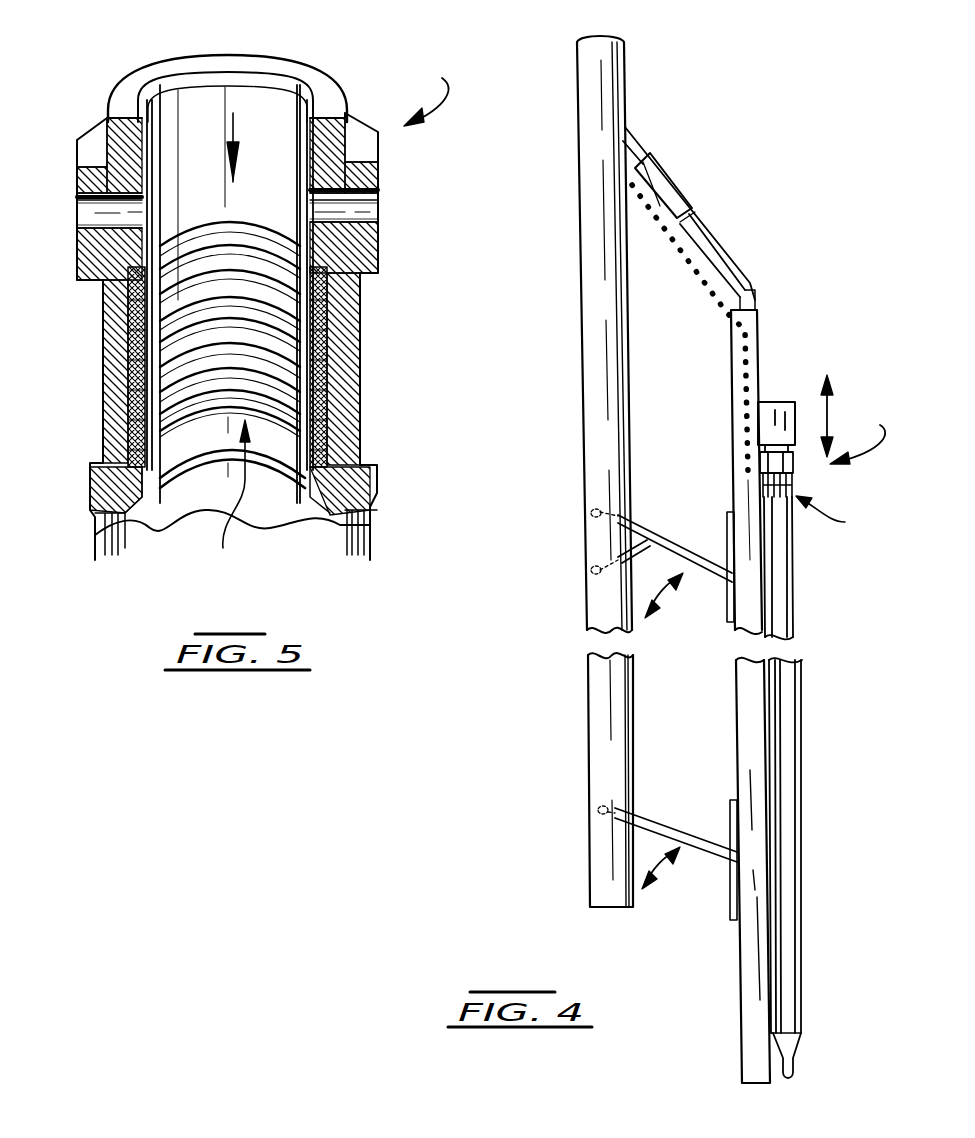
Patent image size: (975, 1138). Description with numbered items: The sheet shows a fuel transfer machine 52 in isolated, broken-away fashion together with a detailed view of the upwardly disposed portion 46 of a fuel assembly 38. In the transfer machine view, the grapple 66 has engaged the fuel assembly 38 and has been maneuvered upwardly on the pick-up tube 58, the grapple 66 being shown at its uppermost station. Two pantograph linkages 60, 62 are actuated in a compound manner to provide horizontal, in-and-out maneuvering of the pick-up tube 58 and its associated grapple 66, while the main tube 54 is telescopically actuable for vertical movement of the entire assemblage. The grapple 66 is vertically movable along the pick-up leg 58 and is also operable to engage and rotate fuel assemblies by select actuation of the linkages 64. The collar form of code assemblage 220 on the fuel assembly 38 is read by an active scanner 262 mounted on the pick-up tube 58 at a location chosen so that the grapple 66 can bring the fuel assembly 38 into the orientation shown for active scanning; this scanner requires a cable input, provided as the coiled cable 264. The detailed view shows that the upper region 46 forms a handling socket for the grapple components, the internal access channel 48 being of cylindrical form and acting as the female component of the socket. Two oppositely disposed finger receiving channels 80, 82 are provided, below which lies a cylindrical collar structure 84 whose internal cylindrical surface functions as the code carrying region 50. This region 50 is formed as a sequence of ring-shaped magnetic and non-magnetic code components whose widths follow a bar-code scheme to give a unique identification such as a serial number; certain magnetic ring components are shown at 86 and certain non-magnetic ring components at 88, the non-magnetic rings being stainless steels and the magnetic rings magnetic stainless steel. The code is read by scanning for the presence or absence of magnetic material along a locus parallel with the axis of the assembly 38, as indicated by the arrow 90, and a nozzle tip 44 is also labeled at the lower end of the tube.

In FIG. 5, the fuel assembly 38 is at (95, 542).
In FIG. 4, the fuel assembly 38 is at (785, 786).
In FIG. 4, the nozzle tip 44 is at (797, 1052).
In FIG. 5, the upwardly disposed portion 46 is at (426, 100).
In FIG. 4, the upwardly disposed portion 46 is at (857, 441).
In FIG. 5, the internal access channel 48 is at (272, 100).
In FIG. 5, the code carrying region 50 is at (223, 548).
In FIG. 4, the code carrying region 50 is at (837, 519).
In FIG. 4, the fuel transfer machine 52 is at (873, 292).
In FIG. 4, the main tube 54 is at (624, 70).
In FIG. 4, the pick-up tube 58 is at (758, 322).
In FIG. 4, the pantograph linkage 60 is at (676, 550).
In FIG. 4, the pantograph linkage 62 is at (665, 830).
In FIG. 4, the linkages 64 is at (742, 140).
In FIG. 4, the grapple 66 is at (783, 400).
In FIG. 5, the finger receiving channel 80 is at (90, 214).
In FIG. 5, the finger receiving channel 82 is at (365, 220).
In FIG. 5, the cylindrical collar structure 84 is at (352, 362).
In FIG. 5, the magnetic ring component 86 is at (128, 278).
In FIG. 5, the non-magnetic ring component 88 is at (128, 310).
In FIG. 5, the arrow 90 is at (233, 124).
In FIG. 4, the code assemblage 220 is at (793, 490).
In FIG. 4, the active scanner 262 is at (760, 488).
In FIG. 4, the coiled cable 264 is at (704, 284).